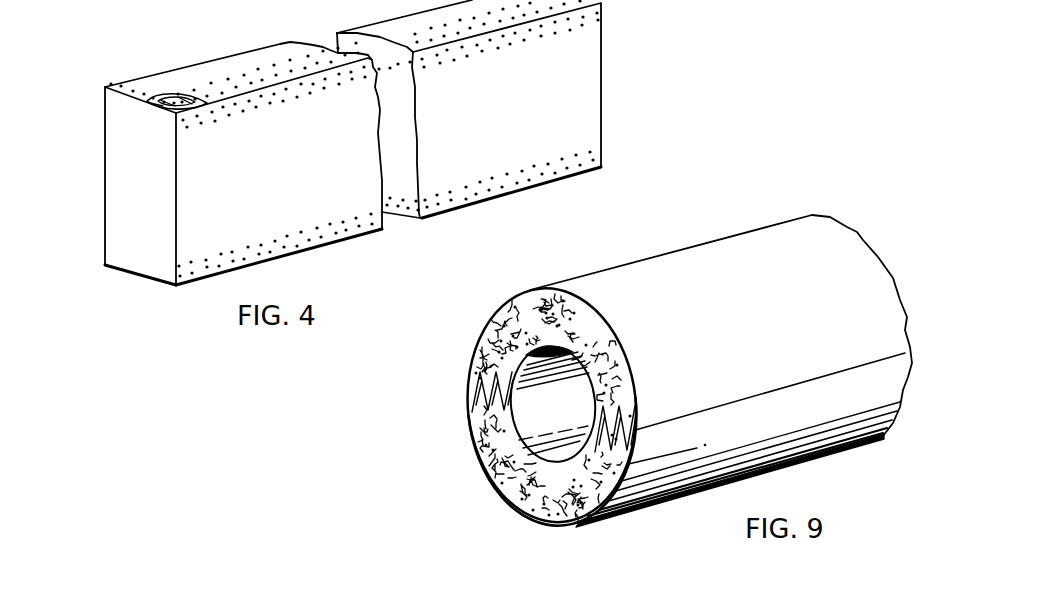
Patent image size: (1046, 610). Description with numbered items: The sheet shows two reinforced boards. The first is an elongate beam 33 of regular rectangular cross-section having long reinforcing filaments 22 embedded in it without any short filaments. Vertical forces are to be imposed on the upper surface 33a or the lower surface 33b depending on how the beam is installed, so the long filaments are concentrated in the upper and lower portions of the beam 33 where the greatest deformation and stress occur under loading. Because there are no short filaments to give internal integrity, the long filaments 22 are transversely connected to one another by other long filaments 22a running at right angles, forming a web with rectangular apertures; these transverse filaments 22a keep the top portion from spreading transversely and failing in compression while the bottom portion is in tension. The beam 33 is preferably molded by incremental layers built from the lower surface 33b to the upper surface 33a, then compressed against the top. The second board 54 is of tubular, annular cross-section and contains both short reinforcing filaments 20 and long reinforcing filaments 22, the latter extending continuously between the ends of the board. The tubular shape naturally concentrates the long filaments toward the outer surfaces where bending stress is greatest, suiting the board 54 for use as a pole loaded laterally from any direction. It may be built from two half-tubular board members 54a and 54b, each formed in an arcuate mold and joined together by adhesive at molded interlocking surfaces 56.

In FIG. 9, the short reinforcing filaments 20 is at (500, 470).
In FIG. 4, the long reinforcing filaments 22 is at (113, 95).
In FIG. 9, the long reinforcing filaments 22 is at (587, 317).
In FIG. 4, the transverse long filaments 22a is at (297, 94).
In FIG. 4, the elongate beam 33 is at (317, 142).
In FIG. 4, the upper surface 33a is at (200, 72).
In FIG. 4, the lower surface 33b is at (392, 214).
In FIG. 9, the board 54 is at (642, 378).
In FIG. 9, the half-tubular board member 54a is at (517, 290).
In FIG. 9, the half-tubular board member 54b is at (523, 507).
In FIG. 9, the molded interlocking surfaces 56 is at (477, 374).